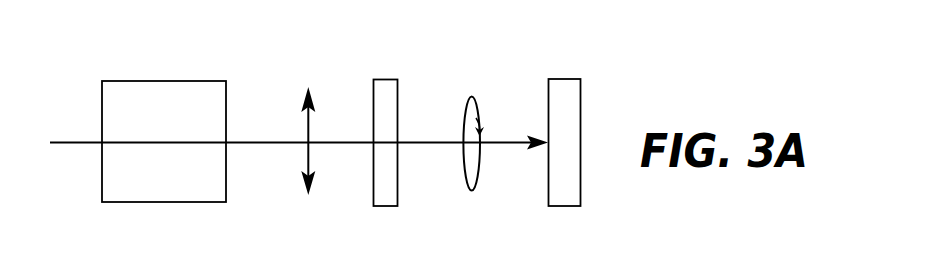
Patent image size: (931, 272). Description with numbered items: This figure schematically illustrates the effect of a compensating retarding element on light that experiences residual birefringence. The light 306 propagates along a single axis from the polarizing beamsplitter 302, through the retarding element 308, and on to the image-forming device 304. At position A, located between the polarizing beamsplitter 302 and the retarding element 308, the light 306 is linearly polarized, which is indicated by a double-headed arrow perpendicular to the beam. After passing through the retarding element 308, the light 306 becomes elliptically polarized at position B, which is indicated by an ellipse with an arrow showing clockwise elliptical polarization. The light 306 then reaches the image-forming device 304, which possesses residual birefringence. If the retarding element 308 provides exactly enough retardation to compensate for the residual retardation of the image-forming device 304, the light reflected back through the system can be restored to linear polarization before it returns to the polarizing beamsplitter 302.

The polarizing beamsplitter 302 is at (156, 80).
The image-forming device 304 is at (565, 79).
The light 306 is at (258, 144).
The retarding element 308 is at (385, 79).
The position A is at (309, 158).
The position B is at (473, 162).